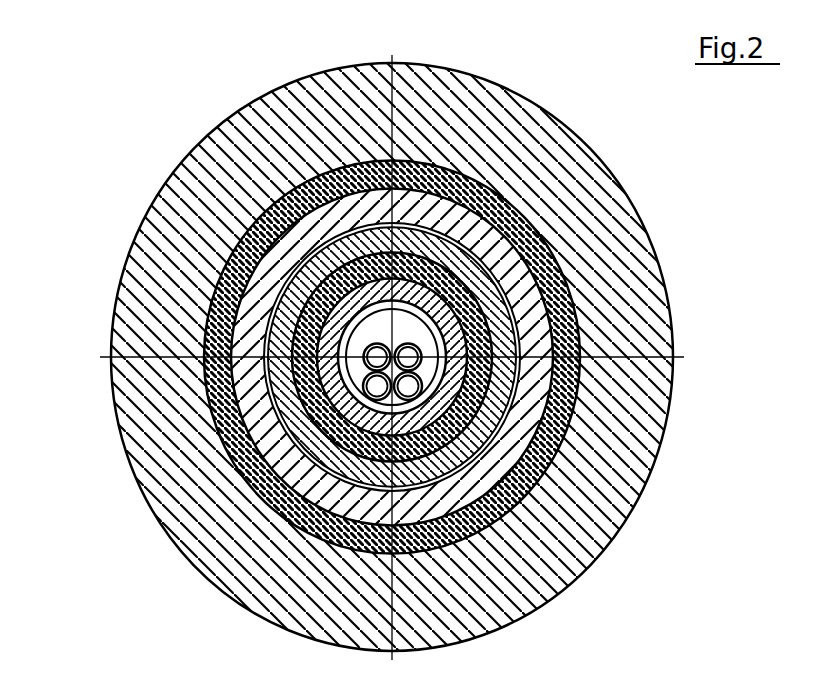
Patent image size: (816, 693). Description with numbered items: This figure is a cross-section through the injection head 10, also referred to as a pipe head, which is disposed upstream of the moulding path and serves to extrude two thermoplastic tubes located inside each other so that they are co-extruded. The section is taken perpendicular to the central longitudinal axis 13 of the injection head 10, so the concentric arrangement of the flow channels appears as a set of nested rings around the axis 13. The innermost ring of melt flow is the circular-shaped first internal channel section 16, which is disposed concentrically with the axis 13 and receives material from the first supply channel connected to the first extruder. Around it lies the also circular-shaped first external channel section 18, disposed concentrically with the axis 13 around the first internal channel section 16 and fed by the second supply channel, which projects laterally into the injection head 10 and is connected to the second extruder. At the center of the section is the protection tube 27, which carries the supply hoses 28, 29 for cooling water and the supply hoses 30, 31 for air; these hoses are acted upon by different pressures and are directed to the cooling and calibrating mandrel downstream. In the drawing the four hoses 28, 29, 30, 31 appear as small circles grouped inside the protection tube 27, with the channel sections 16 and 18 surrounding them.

The injection head 10 is at (138, 150).
The central longitudinal axis 13 is at (356, 400).
The first internal channel section 16 is at (560, 460).
The first external channel section 18 is at (575, 320).
The protection tube 27 is at (348, 328).
The supply hose for cooling water 28 is at (377, 350).
The supply hose for cooling water 29 is at (410, 352).
The supply hose for air 30 is at (376, 390).
The supply hose for air 31 is at (410, 390).